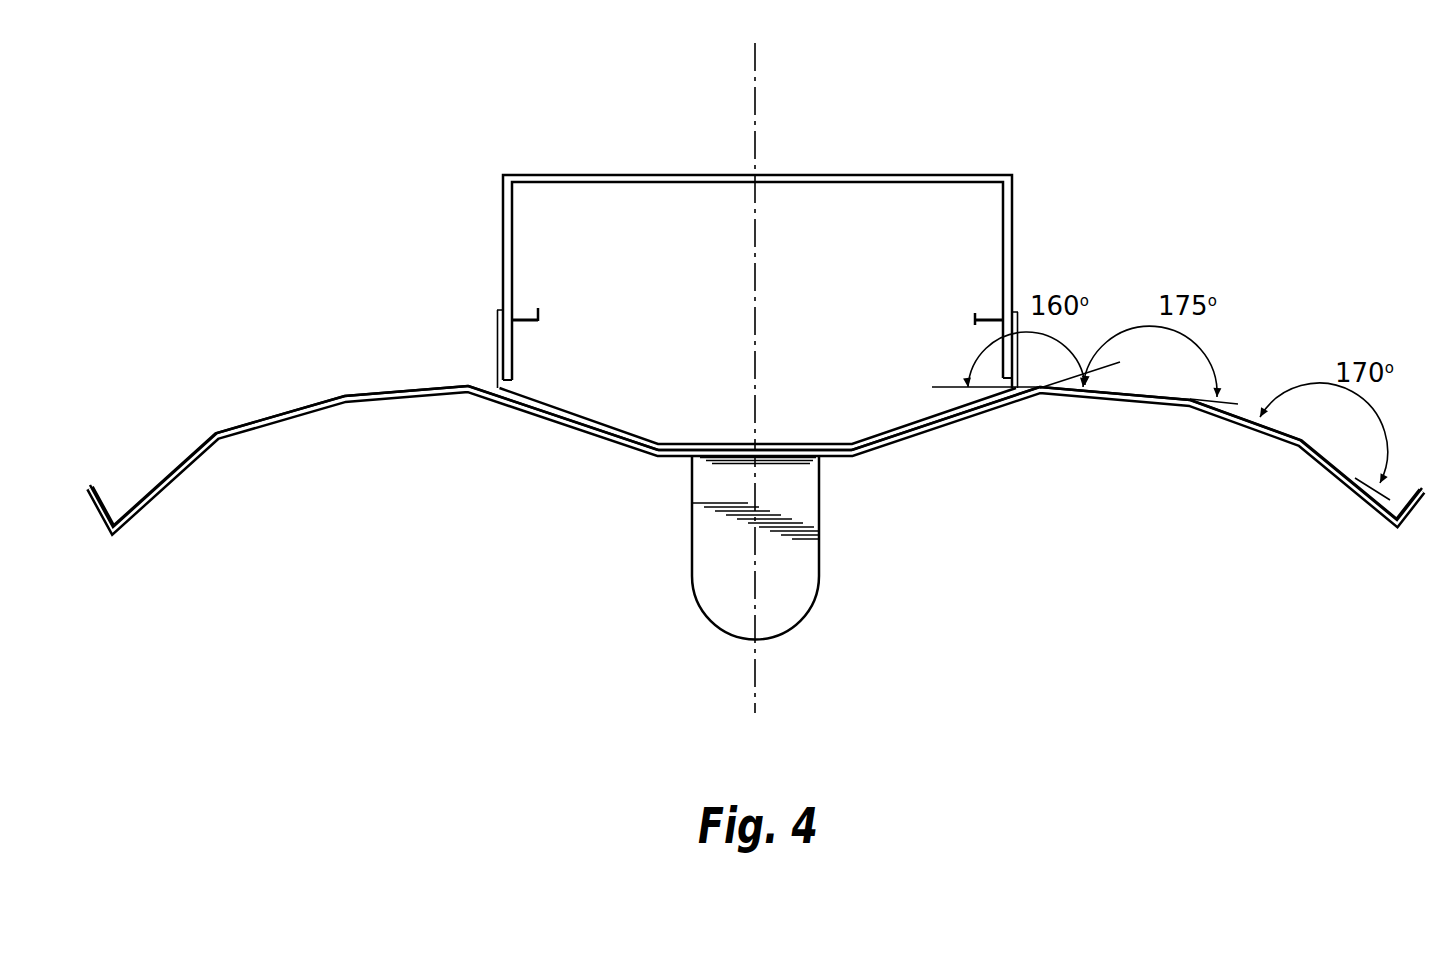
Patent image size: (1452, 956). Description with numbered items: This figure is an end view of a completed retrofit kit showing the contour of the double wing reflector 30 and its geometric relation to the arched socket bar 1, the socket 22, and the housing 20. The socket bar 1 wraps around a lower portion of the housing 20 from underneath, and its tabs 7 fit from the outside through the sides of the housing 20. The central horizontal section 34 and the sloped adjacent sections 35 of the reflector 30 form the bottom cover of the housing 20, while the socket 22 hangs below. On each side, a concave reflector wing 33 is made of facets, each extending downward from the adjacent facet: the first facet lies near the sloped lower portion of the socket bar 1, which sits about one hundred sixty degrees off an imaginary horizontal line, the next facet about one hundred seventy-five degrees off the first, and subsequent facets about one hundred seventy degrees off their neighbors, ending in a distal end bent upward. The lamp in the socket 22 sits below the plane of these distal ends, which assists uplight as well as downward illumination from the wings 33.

The arched socket bar 1 is at (600, 423).
The tabs 7 is at (538, 308).
The housing 20 is at (1013, 178).
The socket 22 is at (718, 614).
The double wing reflector 30 is at (258, 383).
The concave reflector wing 33 is at (427, 396).
The central horizontal section 34 is at (669, 458).
The sloped adjacent sections 35 is at (549, 423).